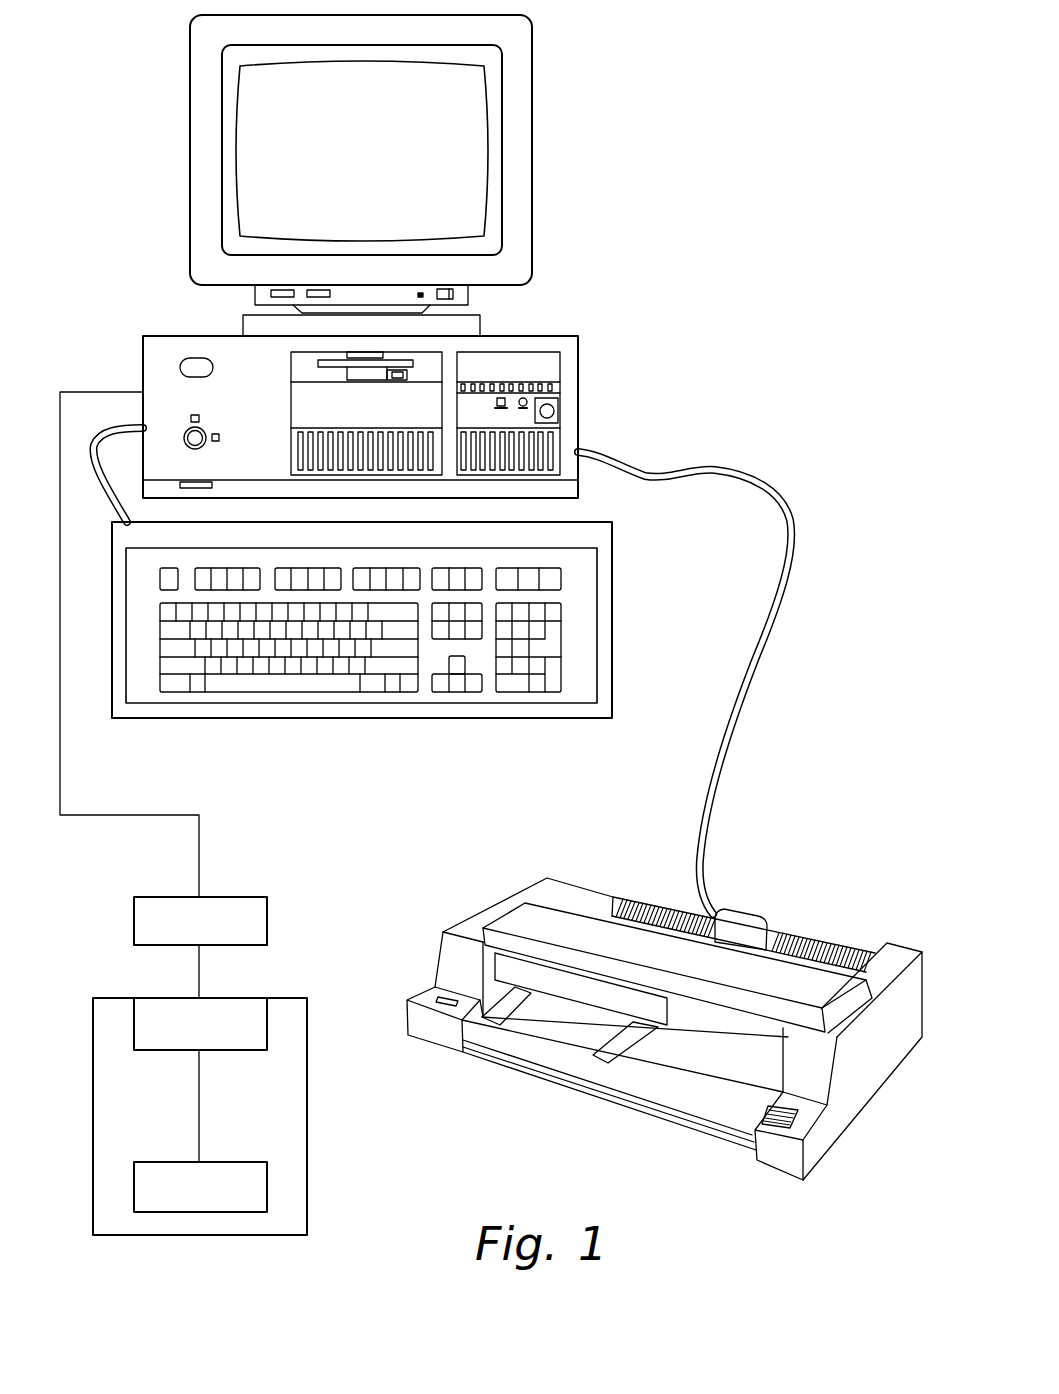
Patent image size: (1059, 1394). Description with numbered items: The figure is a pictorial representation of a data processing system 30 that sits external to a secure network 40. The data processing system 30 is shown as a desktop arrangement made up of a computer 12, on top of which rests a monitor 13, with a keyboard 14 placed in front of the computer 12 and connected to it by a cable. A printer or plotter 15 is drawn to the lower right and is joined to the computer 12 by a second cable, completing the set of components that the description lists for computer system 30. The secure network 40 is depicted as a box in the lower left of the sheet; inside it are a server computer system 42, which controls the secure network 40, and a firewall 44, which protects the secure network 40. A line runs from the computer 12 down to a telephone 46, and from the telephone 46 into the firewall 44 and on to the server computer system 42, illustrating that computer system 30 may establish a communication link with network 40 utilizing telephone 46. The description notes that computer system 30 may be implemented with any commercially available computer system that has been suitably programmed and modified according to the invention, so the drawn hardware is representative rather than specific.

The data processing system 30 is at (693, 62).
The computer 12 is at (578, 396).
The monitor 13 is at (532, 172).
The keyboard 14 is at (205, 718).
The printer or plotter 15 is at (815, 948).
The secure network 40 is at (307, 1133).
The server computer system 42 is at (222, 1162).
The firewall 44 is at (222, 1050).
The telephone 46 is at (267, 917).